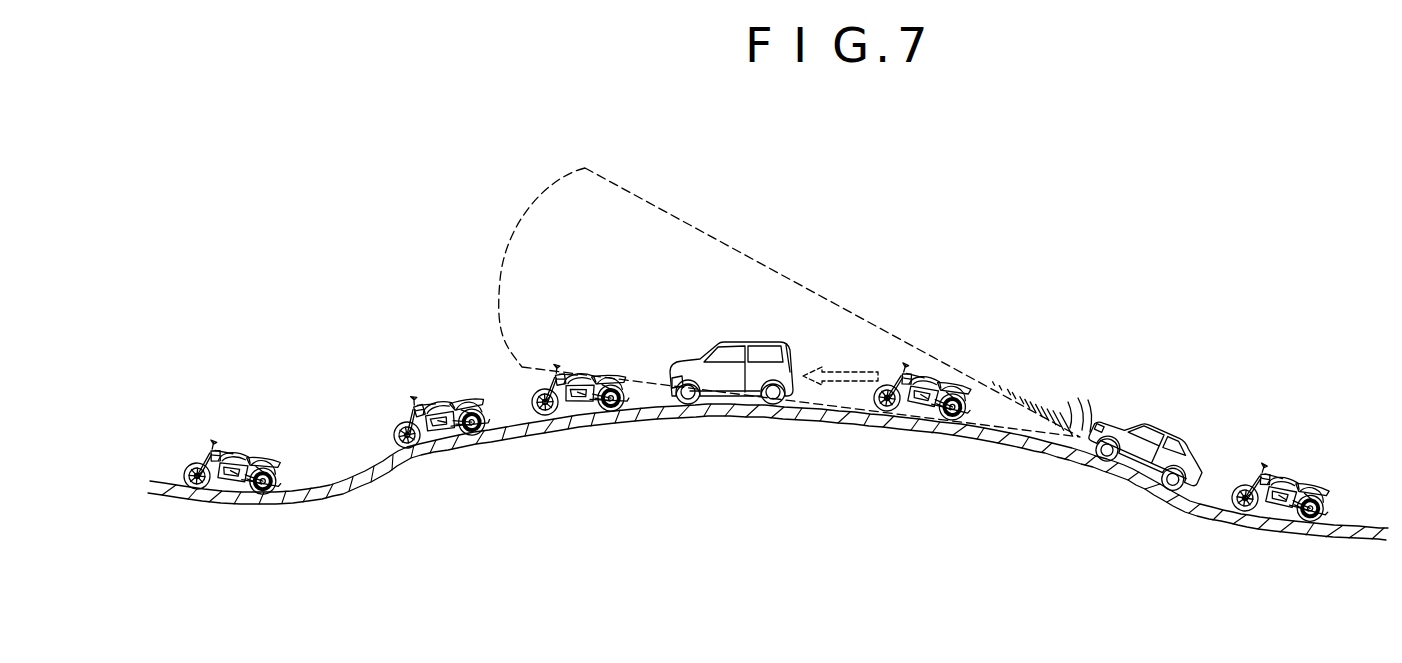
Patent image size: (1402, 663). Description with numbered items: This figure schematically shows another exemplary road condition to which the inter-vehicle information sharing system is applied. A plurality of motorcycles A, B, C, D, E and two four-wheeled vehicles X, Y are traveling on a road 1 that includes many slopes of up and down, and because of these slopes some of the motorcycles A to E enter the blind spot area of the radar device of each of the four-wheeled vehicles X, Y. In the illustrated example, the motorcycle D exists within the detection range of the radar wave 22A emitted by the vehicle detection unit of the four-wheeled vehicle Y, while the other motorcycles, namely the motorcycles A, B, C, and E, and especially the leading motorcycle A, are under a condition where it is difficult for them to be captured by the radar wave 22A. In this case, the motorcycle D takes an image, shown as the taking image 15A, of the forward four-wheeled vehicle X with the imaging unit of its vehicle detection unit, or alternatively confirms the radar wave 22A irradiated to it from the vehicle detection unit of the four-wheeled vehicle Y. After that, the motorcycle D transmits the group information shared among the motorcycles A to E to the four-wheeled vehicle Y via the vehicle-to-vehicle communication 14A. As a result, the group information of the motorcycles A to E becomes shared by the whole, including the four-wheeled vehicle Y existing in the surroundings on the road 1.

The road 1 is at (312, 488).
The vehicle-to-vehicle communication 14A is at (1047, 407).
The taking image 15A is at (848, 387).
The radar wave 22A is at (800, 278).
The motorcycle A is at (233, 457).
The motorcycle B is at (439, 404).
The motorcycle C is at (580, 372).
The motorcycle D is at (923, 375).
The motorcycle E is at (1282, 484).
The four-wheeled vehicle X is at (731, 356).
The four-wheeled vehicle Y is at (1146, 448).